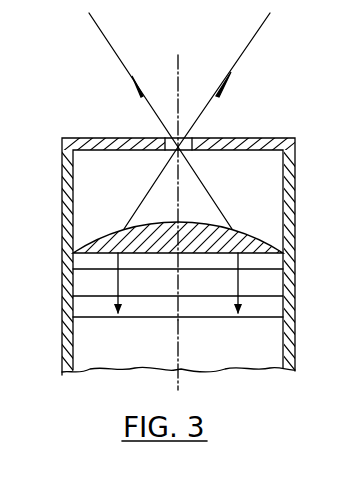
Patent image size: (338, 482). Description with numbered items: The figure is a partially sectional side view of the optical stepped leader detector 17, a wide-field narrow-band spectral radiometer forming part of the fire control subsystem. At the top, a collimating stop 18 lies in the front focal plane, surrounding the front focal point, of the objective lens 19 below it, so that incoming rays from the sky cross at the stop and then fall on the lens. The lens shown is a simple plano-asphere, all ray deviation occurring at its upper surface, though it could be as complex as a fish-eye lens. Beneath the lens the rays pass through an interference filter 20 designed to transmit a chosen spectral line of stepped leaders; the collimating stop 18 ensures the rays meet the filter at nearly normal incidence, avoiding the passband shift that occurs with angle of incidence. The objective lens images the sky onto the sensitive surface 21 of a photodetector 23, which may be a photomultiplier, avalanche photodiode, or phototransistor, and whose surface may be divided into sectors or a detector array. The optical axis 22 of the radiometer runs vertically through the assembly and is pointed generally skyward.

The optical stepped leader detector 17 is at (53, 196).
The collimating stop 18 is at (148, 137).
The objective lens 19 is at (96, 241).
The interference filter 20 is at (161, 292).
The sensitive surface 21 is at (196, 305).
The optical axis 22 is at (182, 344).
The photodetector 23 is at (146, 350).